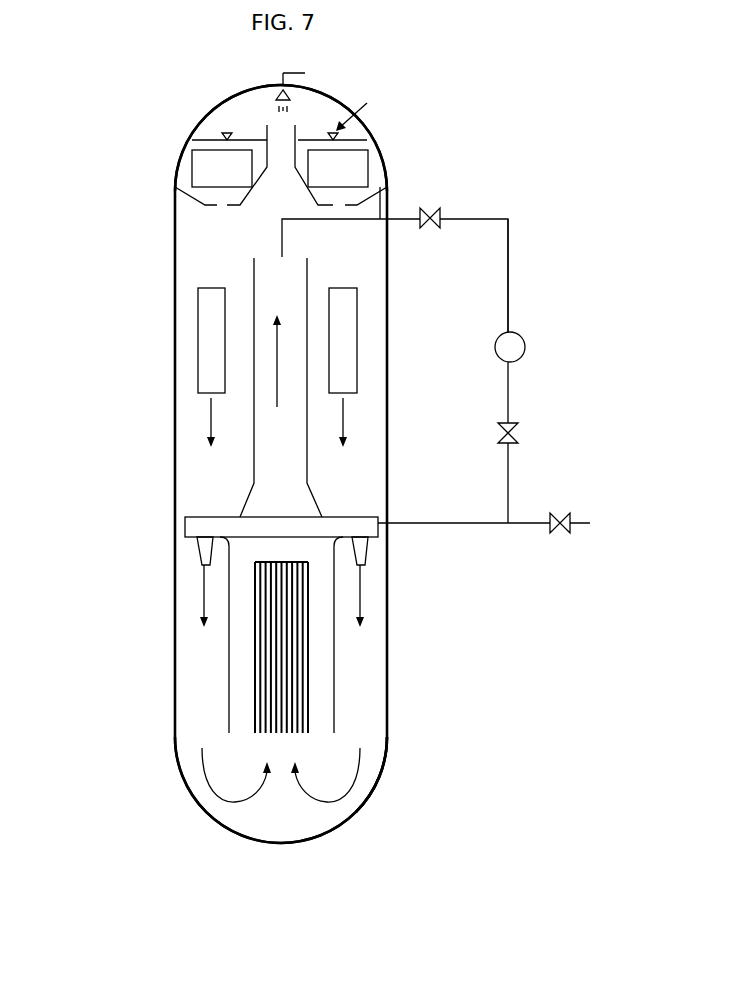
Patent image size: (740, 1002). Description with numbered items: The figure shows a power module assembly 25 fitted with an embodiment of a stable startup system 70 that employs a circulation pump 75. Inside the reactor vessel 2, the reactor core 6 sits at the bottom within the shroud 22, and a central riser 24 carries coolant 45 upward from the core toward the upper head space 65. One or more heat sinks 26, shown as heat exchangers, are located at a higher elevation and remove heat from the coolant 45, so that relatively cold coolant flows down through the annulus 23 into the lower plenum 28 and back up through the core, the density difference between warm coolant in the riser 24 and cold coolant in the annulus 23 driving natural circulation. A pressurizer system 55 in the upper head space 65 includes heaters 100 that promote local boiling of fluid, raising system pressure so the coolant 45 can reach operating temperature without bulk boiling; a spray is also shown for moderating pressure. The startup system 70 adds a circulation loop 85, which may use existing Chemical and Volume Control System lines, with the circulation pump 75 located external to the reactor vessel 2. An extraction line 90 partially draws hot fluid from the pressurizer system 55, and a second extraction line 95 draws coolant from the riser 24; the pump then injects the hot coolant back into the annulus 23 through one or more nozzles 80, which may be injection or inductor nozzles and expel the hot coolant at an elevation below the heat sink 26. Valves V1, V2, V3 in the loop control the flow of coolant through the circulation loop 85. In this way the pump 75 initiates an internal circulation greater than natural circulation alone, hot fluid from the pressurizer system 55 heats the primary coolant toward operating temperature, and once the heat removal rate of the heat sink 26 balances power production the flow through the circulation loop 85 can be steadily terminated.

The reactor vessel 2 is at (232, 838).
The reactor core 6 is at (320, 693).
The shroud 22 is at (217, 685).
The annulus 23 is at (190, 498).
The riser 24 is at (242, 282).
The power module assembly 25 is at (400, 788).
The heat sink 26 is at (188, 325).
The lower plenum 28 is at (245, 818).
The coolant 45 is at (333, 800).
The pressurizer system 55 is at (170, 140).
The upper head space 65 is at (257, 105).
The stable startup system 70 is at (548, 187).
The circulation pump 75 is at (527, 330).
The nozzles 80 is at (367, 555).
The circulation loop 85 is at (498, 292).
The extraction line 90 is at (385, 165).
The extraction line 95 is at (285, 238).
The heaters 100 is at (188, 177).
The valve V1 is at (432, 196).
The valve V2 is at (523, 423).
The valve V3 is at (562, 510).